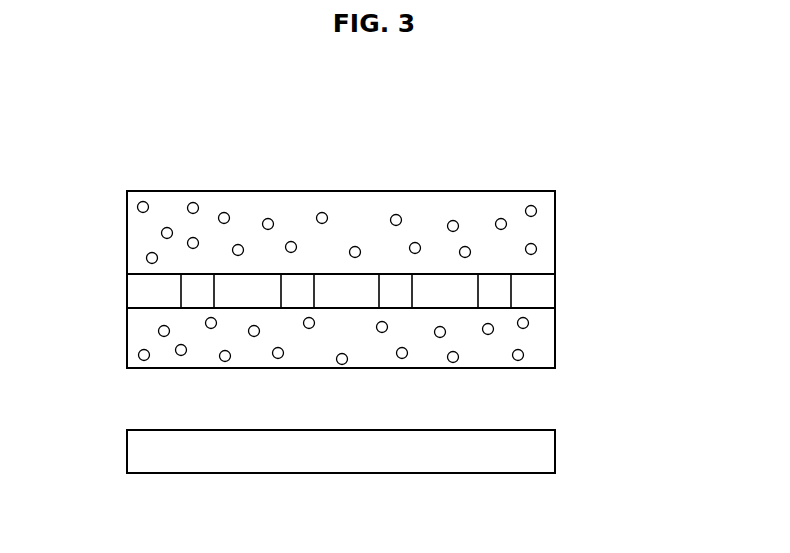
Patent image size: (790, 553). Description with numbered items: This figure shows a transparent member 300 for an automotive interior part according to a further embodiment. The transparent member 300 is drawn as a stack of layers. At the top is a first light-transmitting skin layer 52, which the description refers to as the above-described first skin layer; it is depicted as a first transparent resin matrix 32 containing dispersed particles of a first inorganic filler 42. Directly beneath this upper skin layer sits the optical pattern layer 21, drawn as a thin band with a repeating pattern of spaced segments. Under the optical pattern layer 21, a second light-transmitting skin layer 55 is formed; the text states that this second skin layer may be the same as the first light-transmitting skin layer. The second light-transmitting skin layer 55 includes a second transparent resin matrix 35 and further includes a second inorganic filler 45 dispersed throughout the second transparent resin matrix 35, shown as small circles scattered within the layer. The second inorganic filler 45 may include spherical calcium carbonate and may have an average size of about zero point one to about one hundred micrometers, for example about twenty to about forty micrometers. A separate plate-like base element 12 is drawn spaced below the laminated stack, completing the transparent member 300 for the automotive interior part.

The transparent member 300 is at (72, 80).
The first composite layer 52 is at (499, 124).
The first matrix layer 32 is at (485, 208).
The first particles 42 is at (501, 219).
The optical pattern layer 21 is at (543, 292).
The second light-transmitting skin layer 55 is at (630, 310).
The second transparent resin matrix 35 is at (543, 333).
The second inorganic filler 45 is at (523, 355).
The substrate 12 is at (533, 452).